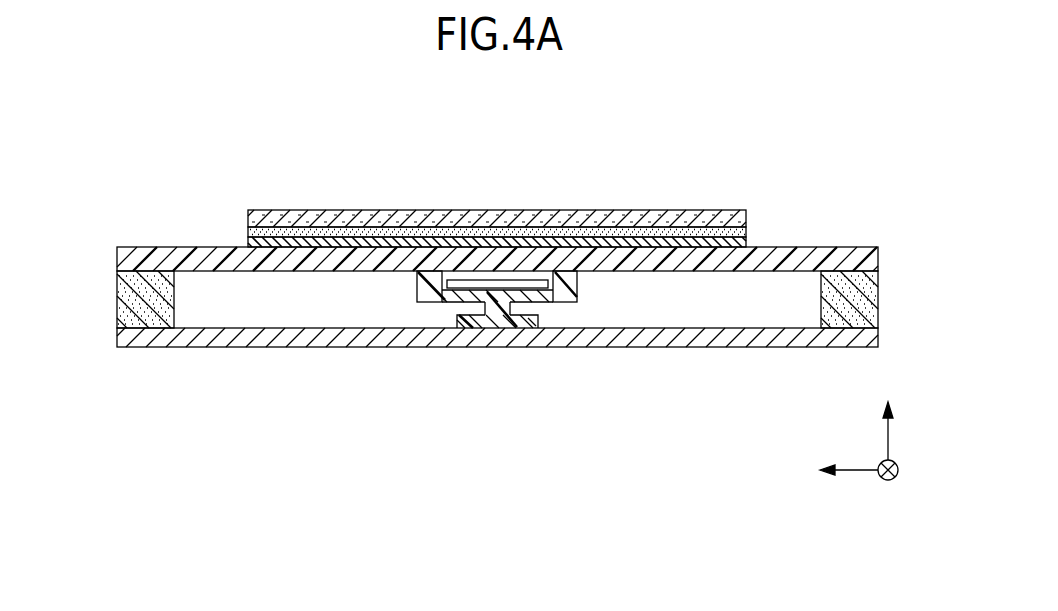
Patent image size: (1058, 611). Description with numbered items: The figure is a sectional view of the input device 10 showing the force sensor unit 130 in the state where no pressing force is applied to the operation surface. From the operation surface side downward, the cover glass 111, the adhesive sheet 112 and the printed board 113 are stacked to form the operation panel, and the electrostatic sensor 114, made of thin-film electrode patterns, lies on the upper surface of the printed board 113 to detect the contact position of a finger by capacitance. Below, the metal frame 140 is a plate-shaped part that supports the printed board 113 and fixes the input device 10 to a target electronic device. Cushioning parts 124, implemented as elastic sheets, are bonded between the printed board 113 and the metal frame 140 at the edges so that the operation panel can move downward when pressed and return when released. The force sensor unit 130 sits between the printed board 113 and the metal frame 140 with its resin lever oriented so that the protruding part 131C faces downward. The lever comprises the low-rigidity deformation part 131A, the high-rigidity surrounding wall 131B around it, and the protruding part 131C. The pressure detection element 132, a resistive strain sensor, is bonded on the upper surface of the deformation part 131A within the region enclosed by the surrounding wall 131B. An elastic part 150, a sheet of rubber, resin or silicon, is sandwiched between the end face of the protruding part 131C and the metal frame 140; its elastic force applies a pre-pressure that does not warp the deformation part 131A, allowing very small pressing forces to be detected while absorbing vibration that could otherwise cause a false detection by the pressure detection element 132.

The input device 10 is at (783, 142).
The cover glass 111 is at (747, 218).
The adhesive sheet 112 is at (747, 232).
The electrostatic sensor 114 is at (747, 243).
The printed board 113 is at (870, 258).
The cushioning parts 124 is at (127, 300).
The metal frame 140 is at (872, 336).
The force sensor unit 130 is at (497, 298).
The deformation part 131A is at (442, 298).
The surrounding wall 131B is at (417, 286).
The protruding part 131C is at (498, 322).
The pressure detection element 132 is at (493, 285).
The elastic part 150 is at (532, 322).